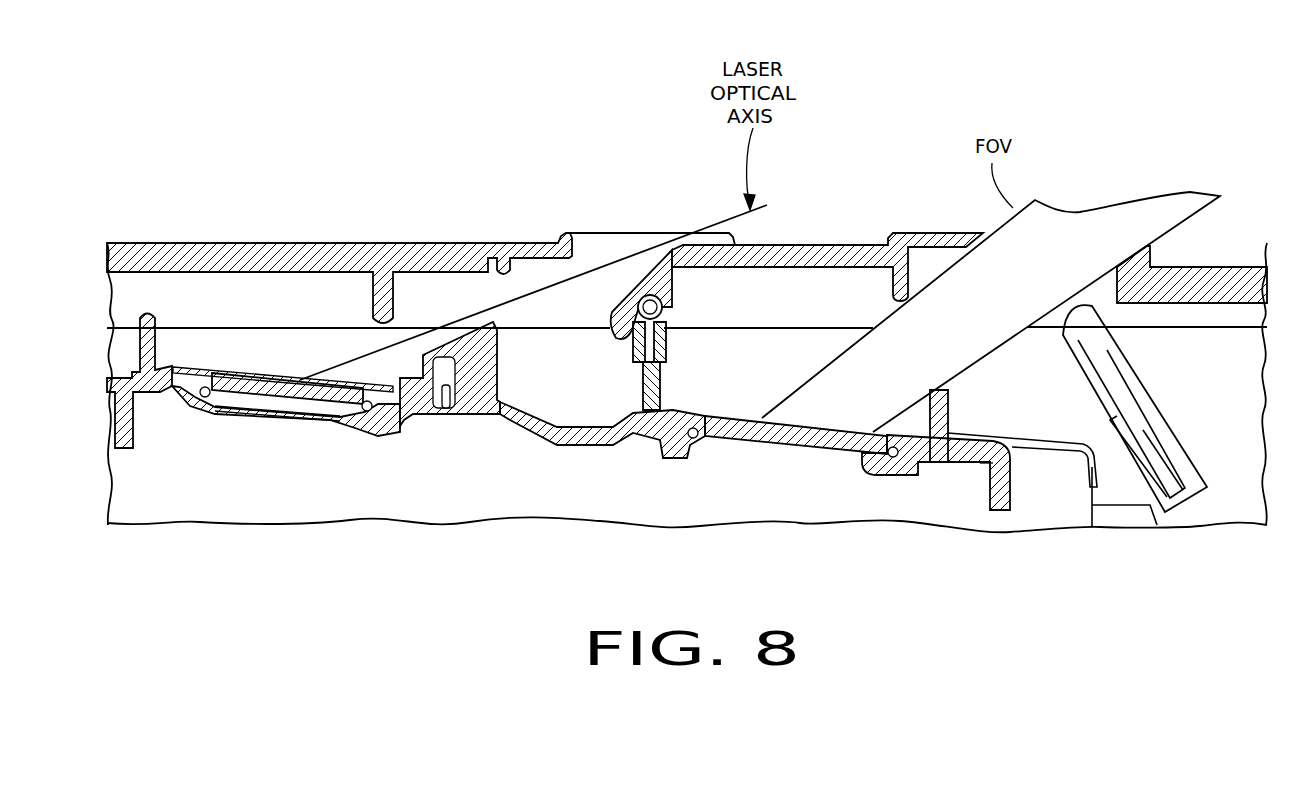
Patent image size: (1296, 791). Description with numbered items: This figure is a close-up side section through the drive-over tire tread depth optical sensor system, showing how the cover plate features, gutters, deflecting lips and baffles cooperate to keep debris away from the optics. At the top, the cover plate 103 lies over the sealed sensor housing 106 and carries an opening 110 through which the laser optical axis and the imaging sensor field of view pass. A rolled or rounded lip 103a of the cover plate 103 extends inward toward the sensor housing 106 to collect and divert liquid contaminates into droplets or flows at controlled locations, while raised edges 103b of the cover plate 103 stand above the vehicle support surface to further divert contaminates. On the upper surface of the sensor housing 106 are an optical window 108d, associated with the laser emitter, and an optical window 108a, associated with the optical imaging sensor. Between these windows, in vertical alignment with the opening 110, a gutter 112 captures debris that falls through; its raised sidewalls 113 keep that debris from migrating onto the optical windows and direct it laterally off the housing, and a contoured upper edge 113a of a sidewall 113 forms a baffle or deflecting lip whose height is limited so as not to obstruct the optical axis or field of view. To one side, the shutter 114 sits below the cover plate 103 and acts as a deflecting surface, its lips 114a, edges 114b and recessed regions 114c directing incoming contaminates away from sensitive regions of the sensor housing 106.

The cover plate 103 is at (393, 243).
The rolled or rounded edge or lip of the cover plate 103a is at (612, 302).
The raised edges of the cover plate 103b is at (566, 232).
The sensor housing 106 is at (342, 460).
The optical window 108a is at (810, 450).
The optical window 108d is at (257, 376).
The opening 110 is at (640, 232).
The gutter 112 is at (588, 435).
The raised sidewall 113 is at (636, 385).
The contoured upper edge 113a is at (497, 335).
The shutter 114 is at (1153, 408).
The lip of the shutter 114a is at (1083, 302).
The edge of the shutter 114b is at (1183, 505).
The recessed region of the shutter 114c is at (1108, 372).